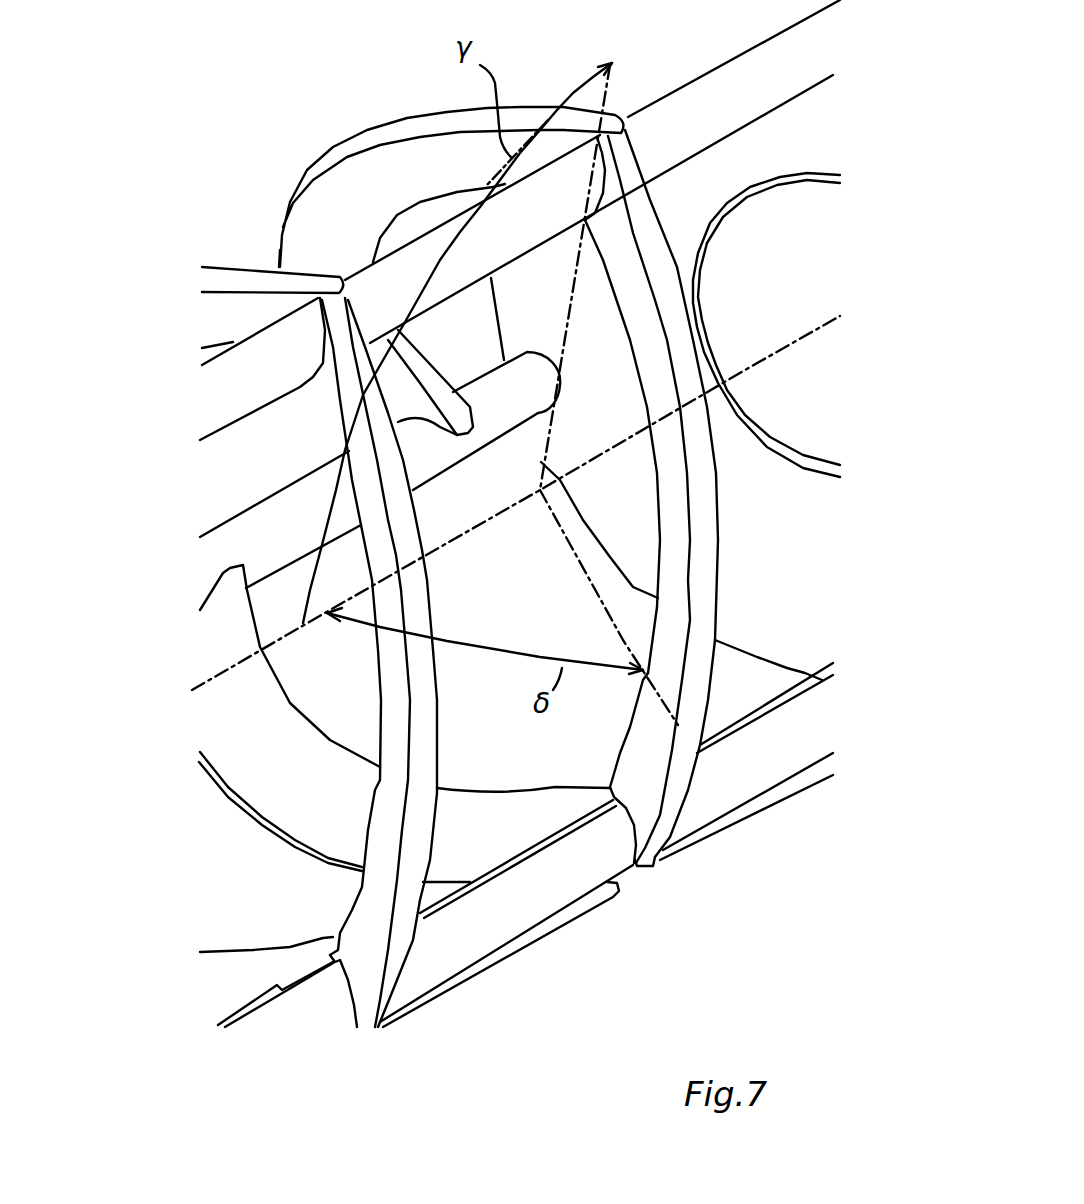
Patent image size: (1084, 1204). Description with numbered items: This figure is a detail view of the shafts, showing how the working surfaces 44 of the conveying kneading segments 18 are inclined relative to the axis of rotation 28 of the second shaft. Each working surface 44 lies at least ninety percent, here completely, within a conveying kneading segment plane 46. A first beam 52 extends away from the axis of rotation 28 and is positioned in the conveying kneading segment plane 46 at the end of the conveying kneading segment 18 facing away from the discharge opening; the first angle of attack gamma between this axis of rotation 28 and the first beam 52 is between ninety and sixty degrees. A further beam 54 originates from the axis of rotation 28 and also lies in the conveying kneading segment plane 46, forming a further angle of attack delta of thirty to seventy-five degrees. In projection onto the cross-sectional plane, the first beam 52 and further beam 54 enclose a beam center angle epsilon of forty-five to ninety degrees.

The conveying kneading segment 18 is at (703, 572).
The axis of rotation of the second shaft 28 is at (763, 360).
The working surface 44 is at (648, 737).
The conveying kneading segment plane 46 is at (627, 234).
The first beam 52 is at (571, 300).
The further beam 54 is at (581, 570).